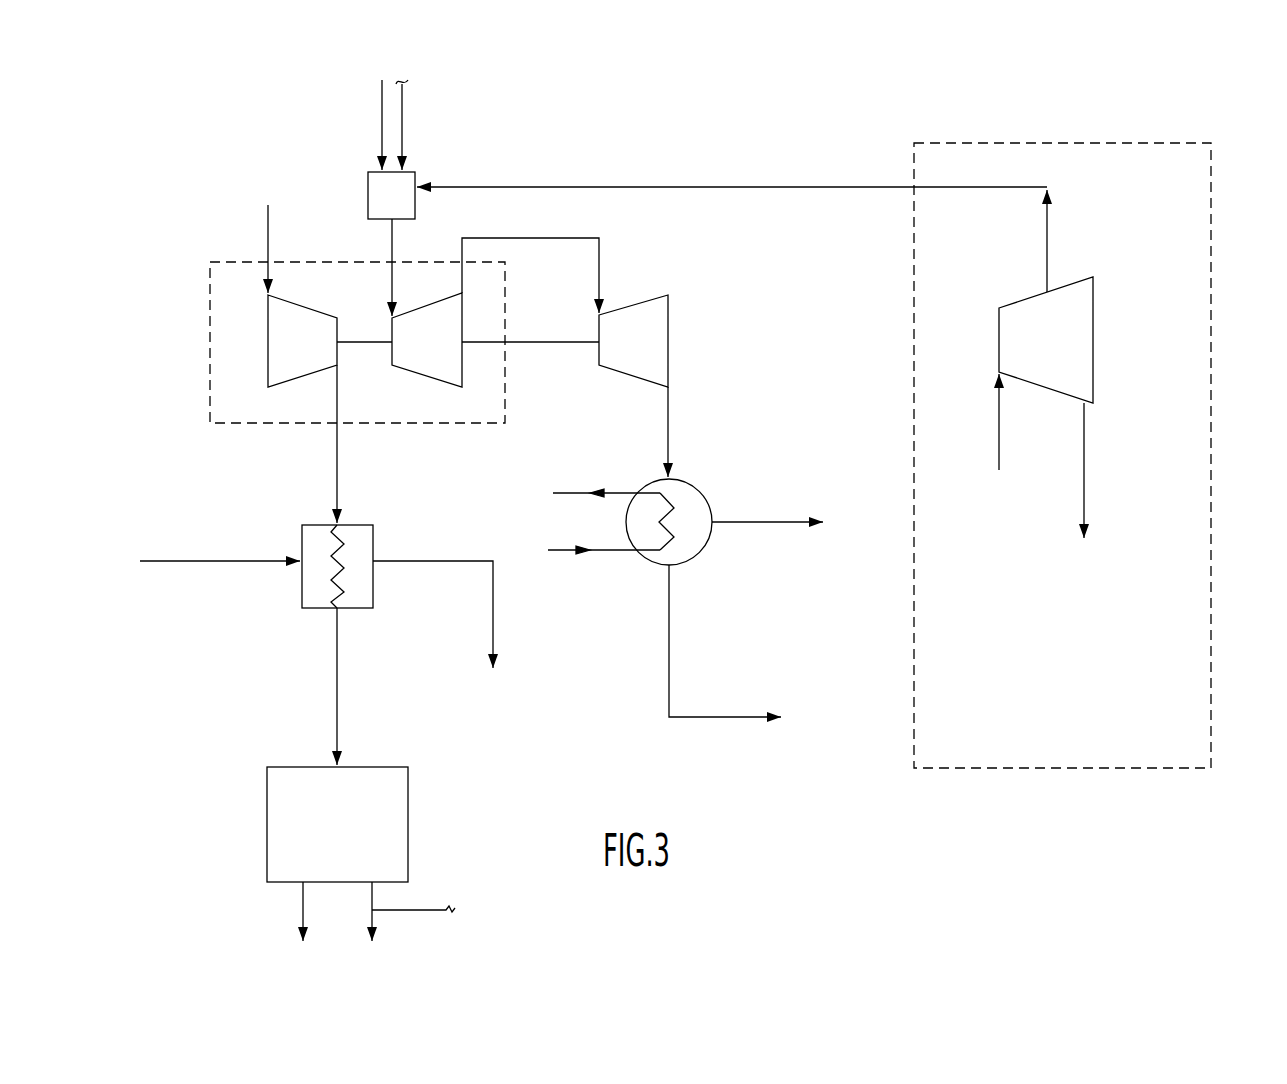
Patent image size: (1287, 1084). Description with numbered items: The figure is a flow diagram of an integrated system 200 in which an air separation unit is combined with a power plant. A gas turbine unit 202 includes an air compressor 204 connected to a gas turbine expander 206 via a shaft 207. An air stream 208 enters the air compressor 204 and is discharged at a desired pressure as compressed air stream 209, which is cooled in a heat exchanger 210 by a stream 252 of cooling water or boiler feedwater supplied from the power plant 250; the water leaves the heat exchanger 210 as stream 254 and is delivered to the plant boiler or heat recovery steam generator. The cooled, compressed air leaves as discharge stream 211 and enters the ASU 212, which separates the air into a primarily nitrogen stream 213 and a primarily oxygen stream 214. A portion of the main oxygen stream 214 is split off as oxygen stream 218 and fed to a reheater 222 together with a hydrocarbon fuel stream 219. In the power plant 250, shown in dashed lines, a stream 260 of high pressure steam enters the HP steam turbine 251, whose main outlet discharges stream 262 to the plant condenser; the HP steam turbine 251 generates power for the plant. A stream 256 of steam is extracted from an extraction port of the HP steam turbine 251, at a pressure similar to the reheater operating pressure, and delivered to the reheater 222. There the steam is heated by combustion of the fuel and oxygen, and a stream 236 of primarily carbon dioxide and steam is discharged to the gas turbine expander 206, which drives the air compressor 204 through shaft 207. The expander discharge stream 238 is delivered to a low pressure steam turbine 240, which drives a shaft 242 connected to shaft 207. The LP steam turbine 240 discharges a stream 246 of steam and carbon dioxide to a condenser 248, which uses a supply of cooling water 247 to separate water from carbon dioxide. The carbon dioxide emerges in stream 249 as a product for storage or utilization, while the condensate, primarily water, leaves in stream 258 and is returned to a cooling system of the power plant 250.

The power generation system 200 is at (1164, 97).
The gas turbine unit 202 is at (210, 312).
The air compressor 204 is at (268, 369).
The gas turbine expander 206 is at (435, 380).
The shaft 207 is at (363, 343).
The air stream 208 is at (269, 236).
The compressed air stream 209 is at (337, 466).
The heat exchanger 210 is at (315, 610).
The discharge stream 211 is at (337, 702).
The ASU 212 is at (267, 826).
The nitrogen stream 213 is at (303, 900).
The oxygen stream 214 is at (372, 898).
The oxygen stream 218 is at (402, 100).
The hydrocarbon fuel stream 219 is at (382, 98).
The reheater 222 is at (415, 172).
The stream 236 is at (393, 240).
The discharge stream 238 is at (545, 240).
The low pressure steam turbine 240 is at (653, 340).
The shaft 242 is at (572, 343).
The stream 246 is at (668, 433).
The cooling water 247 is at (620, 552).
The condenser 248 is at (705, 493).
The carbon dioxide stream 249 is at (753, 523).
The power plant 250 is at (1198, 360).
The high pressure steam turbine 251 is at (1080, 345).
The cooling water stream 252 is at (208, 562).
The water discharge stream 254 is at (422, 562).
The extracted steam stream 256 is at (777, 187).
The condensate stream 258 is at (712, 717).
The high pressure steam stream 260 is at (1000, 432).
The discharge stream 262 is at (1085, 450).